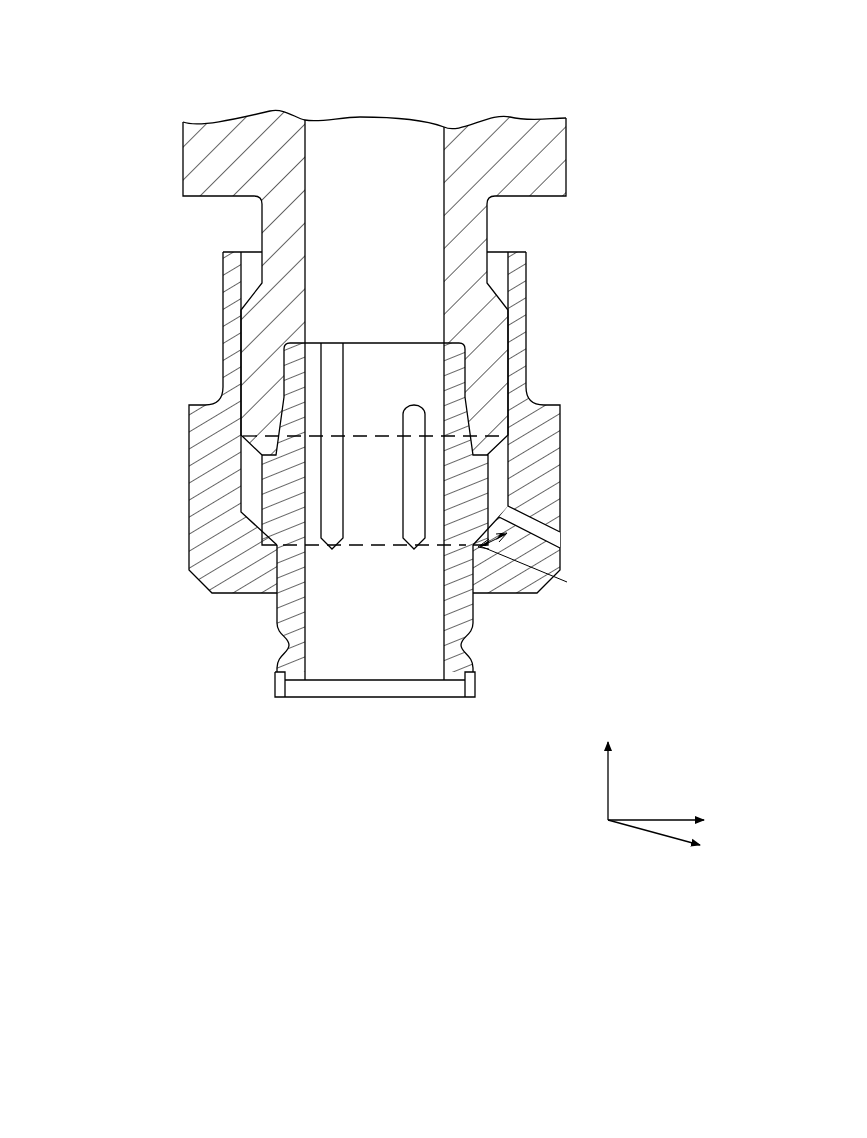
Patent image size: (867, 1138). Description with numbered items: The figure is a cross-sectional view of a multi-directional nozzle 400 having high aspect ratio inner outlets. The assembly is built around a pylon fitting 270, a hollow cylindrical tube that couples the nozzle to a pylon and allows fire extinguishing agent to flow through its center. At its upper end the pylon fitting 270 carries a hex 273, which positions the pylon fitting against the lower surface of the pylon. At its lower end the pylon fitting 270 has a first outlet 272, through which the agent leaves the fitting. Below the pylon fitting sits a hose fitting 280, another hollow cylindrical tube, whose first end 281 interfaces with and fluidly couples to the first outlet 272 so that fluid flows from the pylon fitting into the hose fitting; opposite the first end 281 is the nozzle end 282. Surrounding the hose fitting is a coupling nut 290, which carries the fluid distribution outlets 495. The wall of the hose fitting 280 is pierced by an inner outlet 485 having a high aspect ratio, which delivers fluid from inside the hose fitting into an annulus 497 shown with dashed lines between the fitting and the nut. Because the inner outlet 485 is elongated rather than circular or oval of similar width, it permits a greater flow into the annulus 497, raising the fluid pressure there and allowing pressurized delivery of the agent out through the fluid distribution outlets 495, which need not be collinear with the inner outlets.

The multi-directional nozzle 400 is at (102, 43).
The hex 273 is at (511, 128).
The pylon fitting 270 is at (468, 237).
The first outlet 272 is at (370, 338).
The first end 281 is at (450, 343).
The hose fitting 280 is at (467, 634).
The nozzle end 282 is at (395, 688).
The inner outlet 485 is at (447, 492).
The coupling nut 290 is at (201, 522).
The fluid distribution outlet 495 is at (562, 538).
The annulus 497 is at (242, 447).